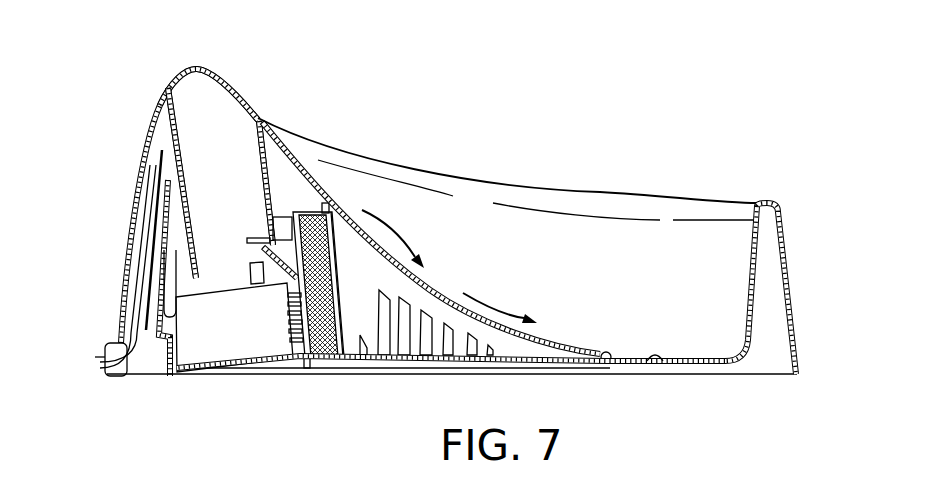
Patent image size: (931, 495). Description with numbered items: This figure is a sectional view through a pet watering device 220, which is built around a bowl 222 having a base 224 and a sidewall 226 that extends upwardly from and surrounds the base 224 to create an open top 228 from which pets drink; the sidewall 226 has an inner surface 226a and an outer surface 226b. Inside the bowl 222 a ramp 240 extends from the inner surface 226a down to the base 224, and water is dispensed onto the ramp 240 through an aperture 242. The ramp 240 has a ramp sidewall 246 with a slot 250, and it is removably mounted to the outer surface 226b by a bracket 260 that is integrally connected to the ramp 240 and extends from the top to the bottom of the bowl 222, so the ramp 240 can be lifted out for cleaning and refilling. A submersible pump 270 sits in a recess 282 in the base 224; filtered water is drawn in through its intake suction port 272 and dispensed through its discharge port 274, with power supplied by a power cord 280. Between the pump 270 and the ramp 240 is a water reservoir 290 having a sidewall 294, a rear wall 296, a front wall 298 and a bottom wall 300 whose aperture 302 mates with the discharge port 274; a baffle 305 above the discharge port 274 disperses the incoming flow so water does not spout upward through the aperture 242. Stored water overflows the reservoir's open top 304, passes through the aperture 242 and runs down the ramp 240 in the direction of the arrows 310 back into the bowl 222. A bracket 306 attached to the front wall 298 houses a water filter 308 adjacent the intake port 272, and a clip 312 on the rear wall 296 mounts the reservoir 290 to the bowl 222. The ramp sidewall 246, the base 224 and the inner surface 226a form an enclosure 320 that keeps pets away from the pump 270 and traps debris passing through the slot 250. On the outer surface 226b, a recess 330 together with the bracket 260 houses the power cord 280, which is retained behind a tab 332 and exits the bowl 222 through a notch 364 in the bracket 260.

The pet watering device 220 is at (524, 242).
The bowl 222 is at (595, 193).
The base 224 is at (656, 360).
The sidewall 226 is at (487, 187).
The inner surface 226a is at (737, 289).
The outer surface 226b is at (794, 270).
The open top 228 is at (702, 230).
The ramp 240 is at (569, 341).
The aperture 242 is at (256, 110).
The ramp sidewall 246 is at (384, 286).
The slot 250 is at (428, 333).
The bracket 260 is at (131, 193).
The submersible pump 270 is at (234, 327).
The intake suction port 272 is at (302, 343).
The discharge port 274 is at (260, 288).
The power cord 280 is at (137, 377).
The recess 282 is at (170, 378).
The water reservoir 290 is at (236, 105).
The sidewall 294 is at (242, 173).
The rear wall 296 is at (168, 128).
The front wall 298 is at (270, 155).
The bottom wall 300 is at (243, 353).
The aperture 302 is at (244, 293).
The open top 304 is at (190, 103).
The baffle 305 is at (266, 240).
The bracket 306 is at (309, 210).
The water filter 308 is at (325, 330).
The arrows 310 is at (468, 260).
The clip 312 is at (176, 140).
The enclosure 320 is at (405, 288).
The recess 330 is at (158, 308).
The tab 332 is at (134, 268).
The notch 364 is at (112, 357).